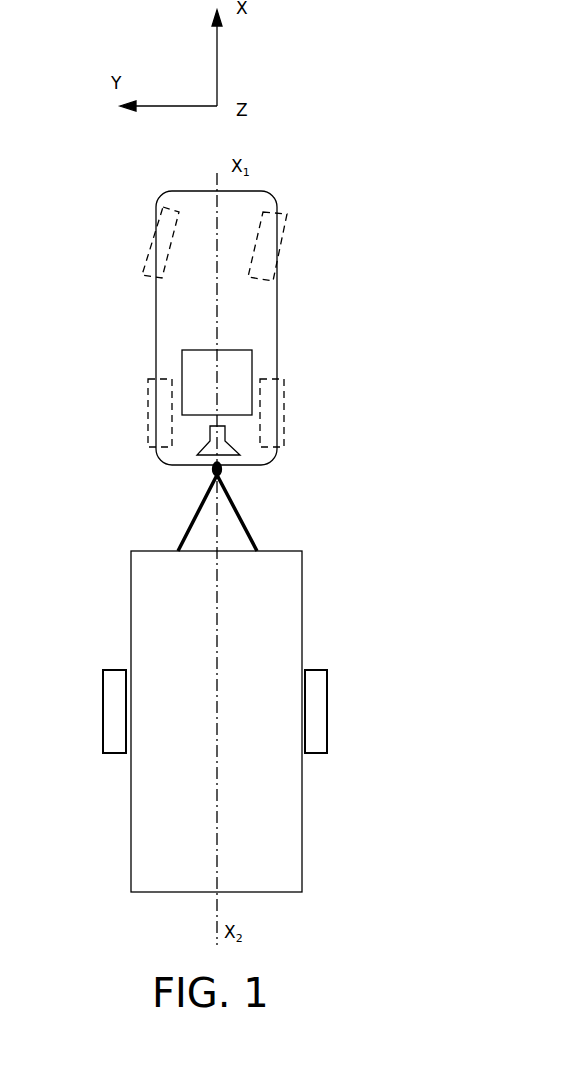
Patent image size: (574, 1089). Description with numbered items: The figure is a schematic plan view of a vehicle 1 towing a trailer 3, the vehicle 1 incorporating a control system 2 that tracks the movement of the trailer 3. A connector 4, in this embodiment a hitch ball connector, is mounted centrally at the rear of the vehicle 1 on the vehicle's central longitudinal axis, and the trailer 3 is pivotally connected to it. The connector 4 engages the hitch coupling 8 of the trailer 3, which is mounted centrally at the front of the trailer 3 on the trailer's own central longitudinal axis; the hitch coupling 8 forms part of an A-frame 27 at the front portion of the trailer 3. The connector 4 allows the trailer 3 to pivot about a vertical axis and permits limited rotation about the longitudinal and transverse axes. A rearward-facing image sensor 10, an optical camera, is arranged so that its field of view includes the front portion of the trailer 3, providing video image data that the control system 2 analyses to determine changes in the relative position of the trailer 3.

The vehicle 1 is at (298, 229).
The control system 2 is at (238, 392).
The trailer 3 is at (322, 585).
The connector 4 is at (212, 469).
The hitch coupling 8 is at (220, 470).
The image sensor 10 is at (217, 442).
The A-frame 27 is at (234, 500).